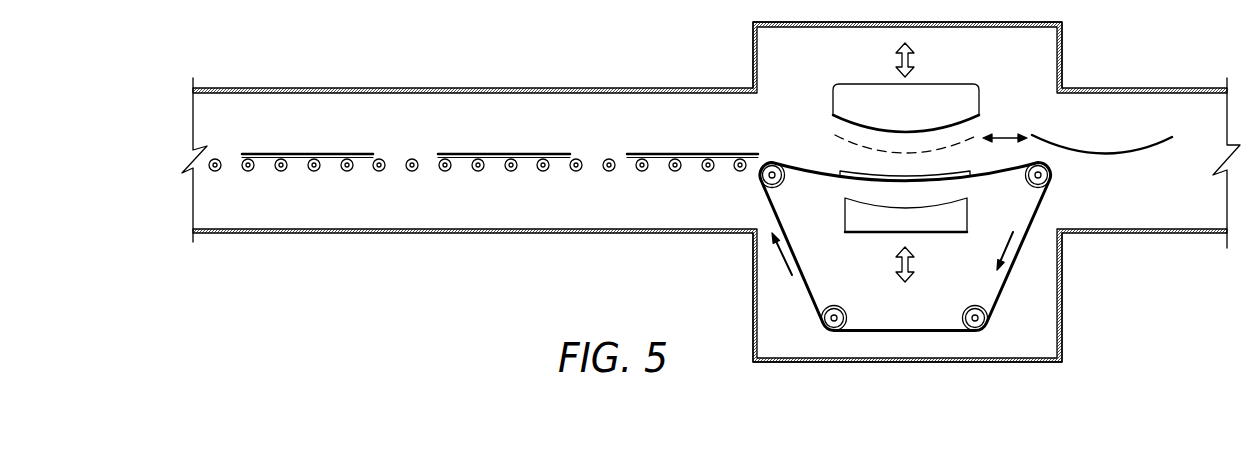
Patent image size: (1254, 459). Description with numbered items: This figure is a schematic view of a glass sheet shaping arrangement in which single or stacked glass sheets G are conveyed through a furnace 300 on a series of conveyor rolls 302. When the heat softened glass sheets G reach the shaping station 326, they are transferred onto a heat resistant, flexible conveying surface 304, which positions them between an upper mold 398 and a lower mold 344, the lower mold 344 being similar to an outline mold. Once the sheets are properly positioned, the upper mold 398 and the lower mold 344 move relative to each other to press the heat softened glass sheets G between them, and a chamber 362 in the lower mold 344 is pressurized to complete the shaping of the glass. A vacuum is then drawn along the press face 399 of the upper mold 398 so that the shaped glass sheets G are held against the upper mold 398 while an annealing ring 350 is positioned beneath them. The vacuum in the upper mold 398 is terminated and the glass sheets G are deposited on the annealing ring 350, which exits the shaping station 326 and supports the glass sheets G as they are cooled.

The furnace 300 is at (355, 88).
The conveyor rolls 302 is at (347, 171).
The glass sheets G is at (307, 154).
The flexible conveying surface 304 is at (802, 165).
The shaping station 326 is at (923, 403).
The lower mold 344 is at (987, 207).
The annealing ring 350 is at (1103, 150).
The chamber 362 is at (875, 225).
The upper mold 398 is at (948, 84).
The press face 399 is at (975, 126).